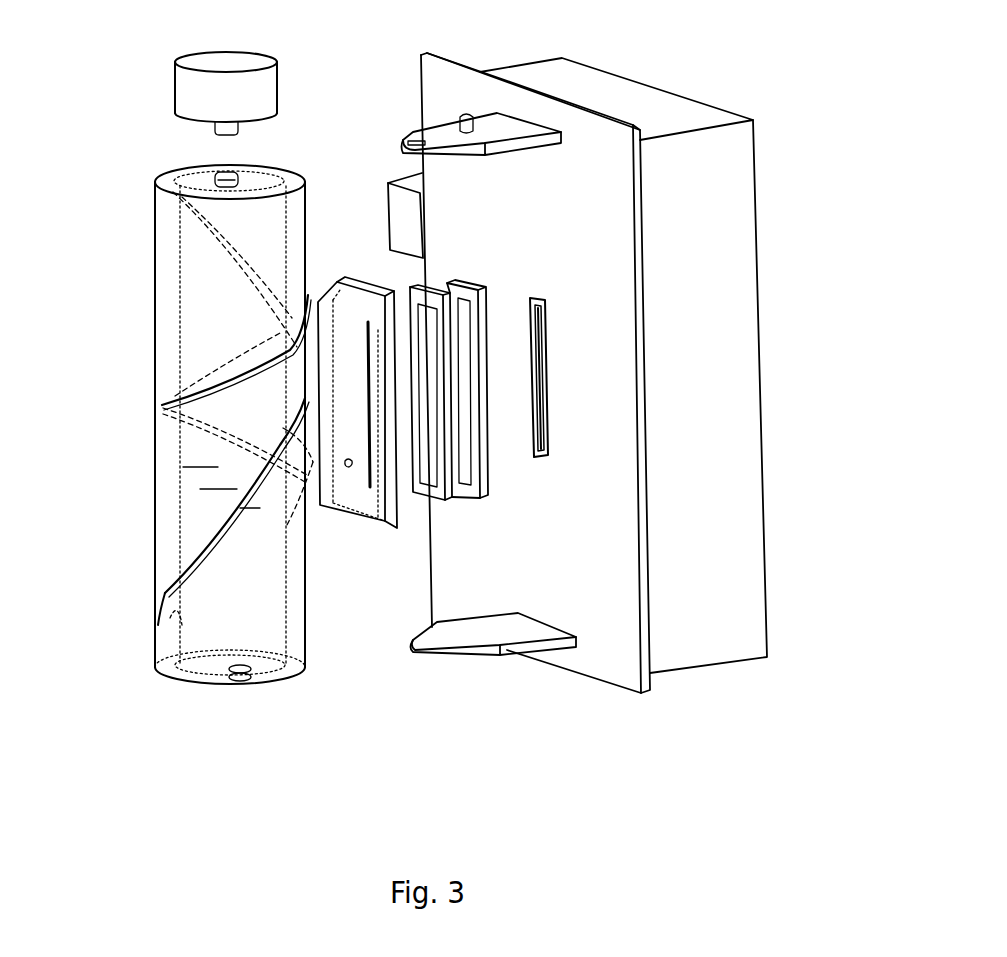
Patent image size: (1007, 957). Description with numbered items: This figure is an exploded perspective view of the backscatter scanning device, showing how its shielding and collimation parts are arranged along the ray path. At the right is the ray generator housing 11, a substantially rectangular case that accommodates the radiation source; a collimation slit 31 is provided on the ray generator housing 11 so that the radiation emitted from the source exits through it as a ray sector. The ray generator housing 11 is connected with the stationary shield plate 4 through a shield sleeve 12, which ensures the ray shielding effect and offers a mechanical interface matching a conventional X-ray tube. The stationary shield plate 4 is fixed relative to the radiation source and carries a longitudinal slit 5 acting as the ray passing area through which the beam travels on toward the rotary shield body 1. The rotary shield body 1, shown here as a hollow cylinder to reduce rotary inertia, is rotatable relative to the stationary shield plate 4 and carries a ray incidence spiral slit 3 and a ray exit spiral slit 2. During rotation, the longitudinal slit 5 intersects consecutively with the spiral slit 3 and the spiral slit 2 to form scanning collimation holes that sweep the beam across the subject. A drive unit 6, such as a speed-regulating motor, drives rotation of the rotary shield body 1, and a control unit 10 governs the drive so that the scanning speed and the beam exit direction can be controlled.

The rotary shield body 1 is at (224, 617).
The ray exit spiral slit 2 is at (249, 294).
The ray incidence spiral slit 3 is at (240, 382).
The stationary shield plate 4 is at (347, 359).
The longitudinal slit 5 is at (371, 486).
The drive unit 6 is at (219, 98).
The control unit 10 is at (403, 222).
The ray generator housing 11 is at (580, 540).
The shield sleeve 12 is at (458, 414).
The collimation slit 31 is at (534, 459).